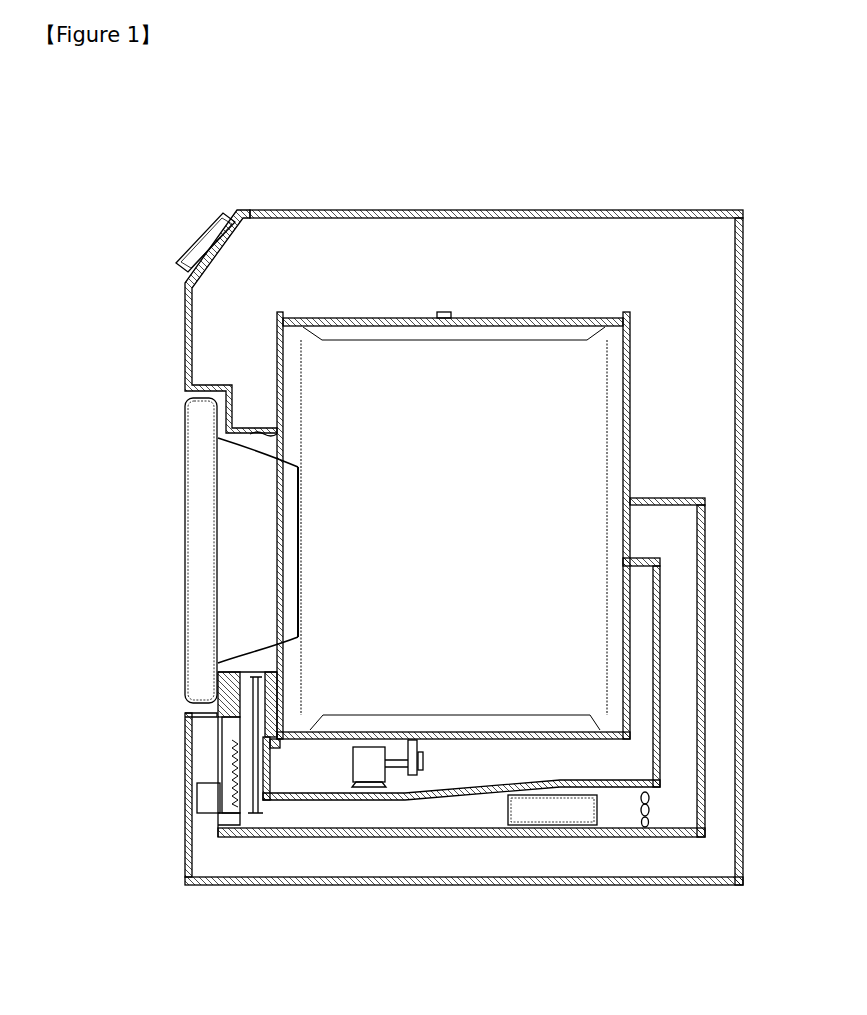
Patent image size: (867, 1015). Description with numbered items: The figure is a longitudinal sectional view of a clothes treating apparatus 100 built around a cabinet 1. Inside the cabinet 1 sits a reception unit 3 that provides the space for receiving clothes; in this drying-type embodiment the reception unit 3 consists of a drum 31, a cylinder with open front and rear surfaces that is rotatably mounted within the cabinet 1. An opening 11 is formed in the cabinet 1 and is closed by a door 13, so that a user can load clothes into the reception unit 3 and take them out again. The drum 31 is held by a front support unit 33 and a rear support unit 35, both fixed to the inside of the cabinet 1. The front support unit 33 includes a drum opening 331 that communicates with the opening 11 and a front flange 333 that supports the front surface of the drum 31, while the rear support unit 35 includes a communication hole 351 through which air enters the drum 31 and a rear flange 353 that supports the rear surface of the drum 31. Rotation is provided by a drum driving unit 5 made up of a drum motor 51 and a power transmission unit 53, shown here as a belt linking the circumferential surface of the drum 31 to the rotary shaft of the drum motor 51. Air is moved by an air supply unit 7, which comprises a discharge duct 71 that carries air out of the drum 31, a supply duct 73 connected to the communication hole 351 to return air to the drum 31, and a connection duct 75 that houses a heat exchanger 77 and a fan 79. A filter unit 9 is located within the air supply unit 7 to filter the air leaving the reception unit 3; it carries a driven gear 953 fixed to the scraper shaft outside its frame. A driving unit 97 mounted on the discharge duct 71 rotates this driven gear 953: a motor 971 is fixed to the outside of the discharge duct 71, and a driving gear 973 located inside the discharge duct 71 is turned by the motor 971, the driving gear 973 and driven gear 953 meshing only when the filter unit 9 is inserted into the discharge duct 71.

The clothes treating apparatus 100 is at (447, 96).
The cabinet 1 is at (744, 261).
The reception unit 3 is at (397, 305).
The drum driving unit 5 is at (366, 862).
The air supply unit 7 is at (622, 805).
The filter unit 9 is at (245, 690).
The opening 11 is at (262, 425).
The door 13 is at (195, 468).
The drum 31 is at (582, 393).
The front support unit 33 is at (285, 343).
The rear support unit 35 is at (628, 312).
The drum motor 51 is at (370, 787).
The power transmission unit 53 is at (412, 778).
The discharge duct 71 is at (232, 730).
The supply duct 73 is at (683, 640).
The connection duct 75 is at (435, 837).
The heat exchanger 77 is at (548, 825).
The fan 79 is at (652, 795).
The driving unit 97 is at (154, 823).
The drum opening 331 is at (265, 443).
The front flange 333 is at (218, 247).
The communication hole 351 is at (632, 535).
The rear flange 353 is at (620, 357).
The driven gear 953 is at (232, 758).
The motor 971 is at (197, 797).
The driving gear 973 is at (235, 813).